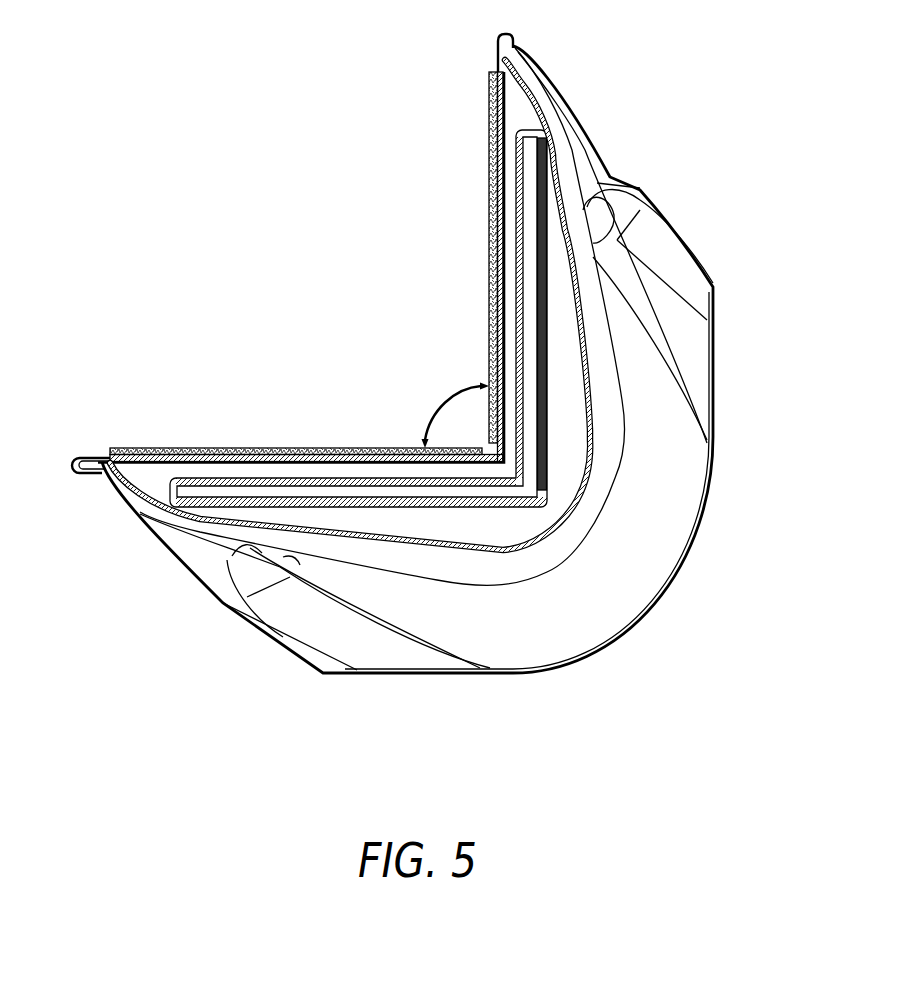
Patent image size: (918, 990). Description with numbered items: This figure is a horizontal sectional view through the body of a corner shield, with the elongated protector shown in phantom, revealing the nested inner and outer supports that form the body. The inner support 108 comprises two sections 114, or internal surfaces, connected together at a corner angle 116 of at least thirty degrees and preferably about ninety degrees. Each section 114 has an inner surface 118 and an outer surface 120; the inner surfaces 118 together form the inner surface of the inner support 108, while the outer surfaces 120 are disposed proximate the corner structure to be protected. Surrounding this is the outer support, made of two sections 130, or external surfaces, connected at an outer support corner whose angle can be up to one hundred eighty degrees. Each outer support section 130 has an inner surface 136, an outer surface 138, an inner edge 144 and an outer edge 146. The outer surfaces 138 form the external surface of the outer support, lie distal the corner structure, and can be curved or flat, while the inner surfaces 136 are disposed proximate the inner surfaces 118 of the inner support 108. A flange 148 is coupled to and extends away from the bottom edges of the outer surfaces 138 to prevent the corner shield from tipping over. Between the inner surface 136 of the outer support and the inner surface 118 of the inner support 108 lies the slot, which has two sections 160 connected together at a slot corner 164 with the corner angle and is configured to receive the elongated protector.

The inner support 108 is at (445, 96).
The sections 114 is at (512, 168).
The corner angle 116 is at (437, 400).
The inner surface 118 is at (527, 155).
The outer surface 120 is at (492, 345).
The sections 130 is at (563, 402).
The inner surface 136 is at (547, 320).
The outer surface 138 is at (593, 450).
The inner edge 144 is at (567, 483).
The outer edge 146 is at (525, 100).
The flange 148 is at (644, 574).
The sections 160 is at (530, 290).
The slot corner 164 is at (565, 490).